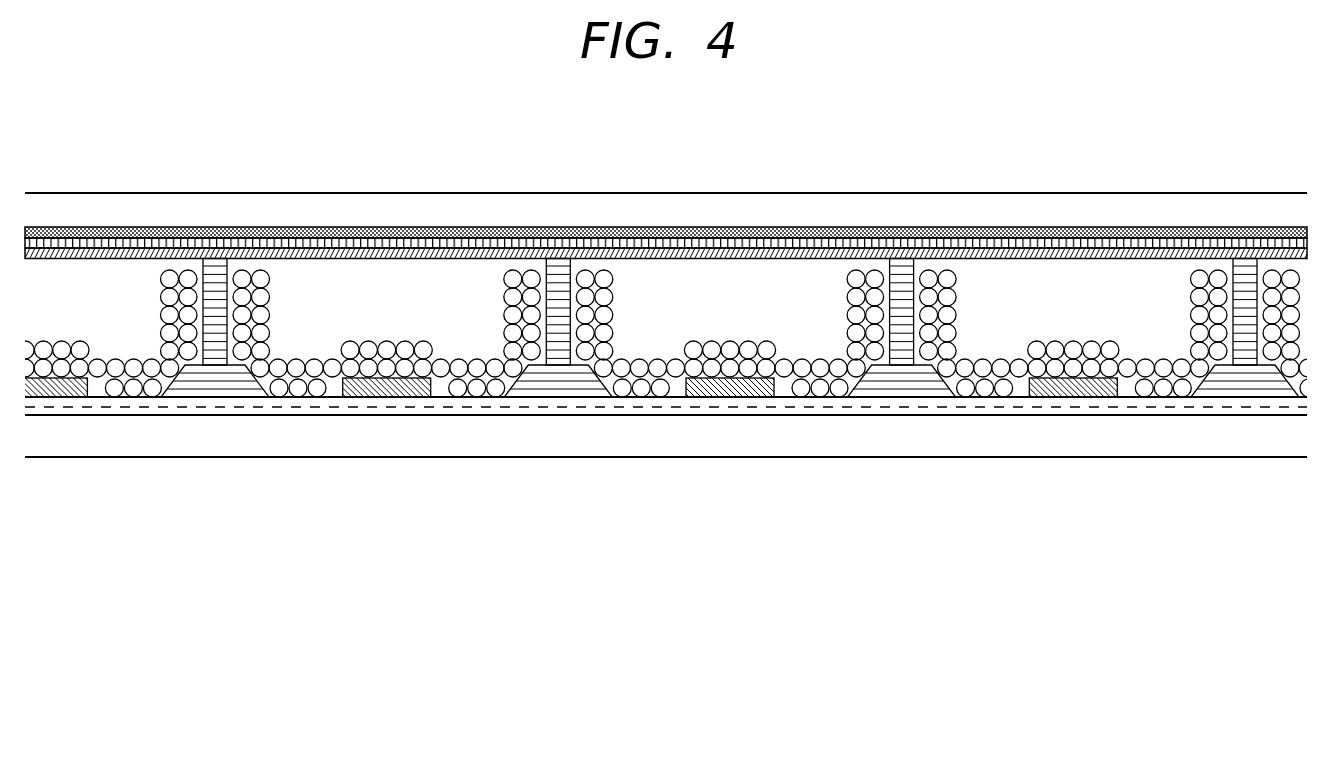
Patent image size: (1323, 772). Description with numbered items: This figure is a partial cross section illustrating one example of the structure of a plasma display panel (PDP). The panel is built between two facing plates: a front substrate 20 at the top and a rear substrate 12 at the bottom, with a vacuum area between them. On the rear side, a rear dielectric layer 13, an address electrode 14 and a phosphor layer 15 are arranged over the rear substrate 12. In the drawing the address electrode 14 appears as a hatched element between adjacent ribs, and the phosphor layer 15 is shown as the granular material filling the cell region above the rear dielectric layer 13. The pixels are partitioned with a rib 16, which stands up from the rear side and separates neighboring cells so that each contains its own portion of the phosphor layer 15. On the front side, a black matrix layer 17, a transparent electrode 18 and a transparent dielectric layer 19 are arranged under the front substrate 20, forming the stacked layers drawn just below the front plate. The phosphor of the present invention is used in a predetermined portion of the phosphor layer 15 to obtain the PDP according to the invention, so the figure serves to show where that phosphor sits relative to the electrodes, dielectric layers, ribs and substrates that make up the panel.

The rear substrate 12 is at (513, 447).
The rear dielectric layer 13 is at (713, 402).
The address electrode 14 is at (373, 392).
The phosphor layer 15 is at (818, 370).
The rib 16 is at (913, 378).
The black matrix layer 17 is at (362, 253).
The transparent electrode 18 is at (551, 246).
The transparent dielectric layer 19 is at (851, 233).
The front substrate 20 is at (1051, 210).